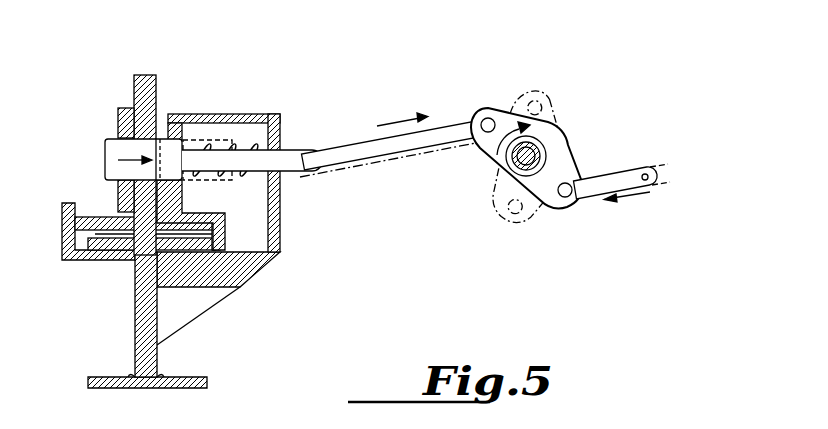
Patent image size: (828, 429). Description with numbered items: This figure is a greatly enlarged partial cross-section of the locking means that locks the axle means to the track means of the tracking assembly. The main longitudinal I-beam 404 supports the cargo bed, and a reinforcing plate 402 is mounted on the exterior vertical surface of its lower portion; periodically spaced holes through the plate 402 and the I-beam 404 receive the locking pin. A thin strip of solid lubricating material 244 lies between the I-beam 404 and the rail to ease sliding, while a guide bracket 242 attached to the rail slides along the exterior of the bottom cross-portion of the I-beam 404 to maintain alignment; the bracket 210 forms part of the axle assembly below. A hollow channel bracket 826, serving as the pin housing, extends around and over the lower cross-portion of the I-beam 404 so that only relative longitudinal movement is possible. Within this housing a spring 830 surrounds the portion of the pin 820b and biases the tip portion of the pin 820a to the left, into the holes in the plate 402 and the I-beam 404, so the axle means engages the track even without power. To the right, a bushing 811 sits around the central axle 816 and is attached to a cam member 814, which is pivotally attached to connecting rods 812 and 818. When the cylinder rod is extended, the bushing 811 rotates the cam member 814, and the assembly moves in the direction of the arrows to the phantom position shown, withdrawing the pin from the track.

The bracket 210 is at (145, 297).
The guide bracket 242 is at (63, 240).
The strip of solid lubricating material 244 is at (113, 223).
The reinforcing plate 402 is at (118, 123).
The I-beam 404 is at (155, 80).
The bushing 811 is at (531, 178).
The connecting rod 812 is at (630, 175).
The cam member 814 is at (553, 145).
The central axle 816 is at (513, 160).
The connecting rod 818 is at (418, 146).
The tip portion of the pin 820a is at (115, 150).
The portion of the pin 820b is at (287, 152).
The hollow channel bracket 826 is at (222, 114).
The spring 830 is at (250, 147).